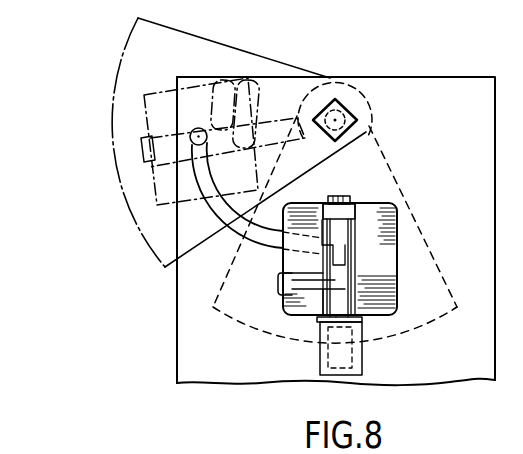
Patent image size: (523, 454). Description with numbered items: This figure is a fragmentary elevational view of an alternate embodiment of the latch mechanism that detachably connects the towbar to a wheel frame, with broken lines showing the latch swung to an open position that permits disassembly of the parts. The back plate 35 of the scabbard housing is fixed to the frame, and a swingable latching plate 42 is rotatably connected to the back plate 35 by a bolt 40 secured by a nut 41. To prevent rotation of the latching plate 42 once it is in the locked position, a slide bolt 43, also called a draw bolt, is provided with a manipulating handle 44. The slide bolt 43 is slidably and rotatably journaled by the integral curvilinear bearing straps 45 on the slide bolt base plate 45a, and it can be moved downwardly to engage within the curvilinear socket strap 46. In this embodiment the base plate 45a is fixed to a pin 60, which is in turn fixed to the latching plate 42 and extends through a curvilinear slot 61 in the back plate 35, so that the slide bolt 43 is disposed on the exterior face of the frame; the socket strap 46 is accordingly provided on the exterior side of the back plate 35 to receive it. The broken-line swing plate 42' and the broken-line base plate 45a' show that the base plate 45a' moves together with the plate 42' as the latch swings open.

The back plate 35 is at (441, 354).
The bolt 40 is at (354, 130).
The nut 41 is at (350, 112).
The latching plate 42 is at (335, 229).
The swing plate in open position 42' is at (217, 142).
The slide bolt 43 is at (359, 322).
The manipulating handle 44 is at (310, 288).
The bearing straps 45 is at (349, 213).
The slide bolt base plate 45a is at (364, 259).
The slide bolt base plate in open position 45a' is at (174, 141).
The socket strap 46 is at (361, 357).
The pin 60 is at (342, 272).
The curvilinear slot 61 is at (233, 231).